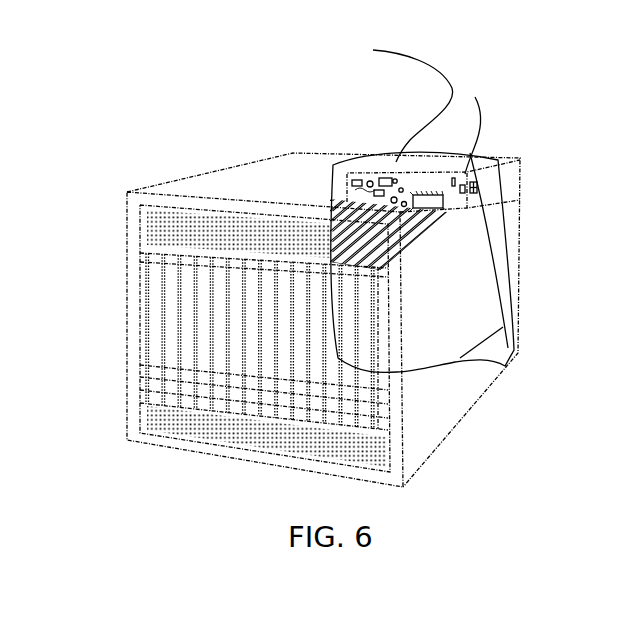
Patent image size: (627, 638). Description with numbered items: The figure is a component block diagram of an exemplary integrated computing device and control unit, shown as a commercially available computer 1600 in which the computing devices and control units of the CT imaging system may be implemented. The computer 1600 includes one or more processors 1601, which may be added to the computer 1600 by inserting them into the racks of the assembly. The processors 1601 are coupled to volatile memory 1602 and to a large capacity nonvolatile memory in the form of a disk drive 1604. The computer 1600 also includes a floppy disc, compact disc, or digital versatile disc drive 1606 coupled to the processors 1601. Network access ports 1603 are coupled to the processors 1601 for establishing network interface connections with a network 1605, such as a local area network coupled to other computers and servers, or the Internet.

The computer 1600 is at (103, 87).
The processors 1601 is at (420, 212).
The volatile memory 1602 is at (452, 211).
The network access ports 1603 is at (183, 297).
The disk drive 1604 is at (165, 320).
The network 1605 is at (452, 89).
The disc drive 1606 is at (202, 344).